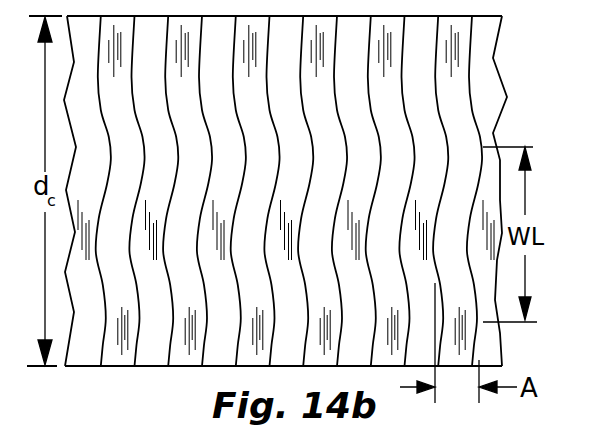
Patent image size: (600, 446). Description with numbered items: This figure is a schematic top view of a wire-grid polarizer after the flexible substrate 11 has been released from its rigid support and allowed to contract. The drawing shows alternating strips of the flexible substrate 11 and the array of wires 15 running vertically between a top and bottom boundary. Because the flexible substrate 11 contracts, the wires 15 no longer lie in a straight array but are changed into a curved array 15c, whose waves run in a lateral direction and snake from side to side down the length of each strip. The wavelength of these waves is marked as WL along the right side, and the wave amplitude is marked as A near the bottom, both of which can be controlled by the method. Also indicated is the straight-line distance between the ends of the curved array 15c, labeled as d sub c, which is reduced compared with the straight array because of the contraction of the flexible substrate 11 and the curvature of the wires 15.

The flexible substrate 11 is at (502, 101).
The array of wires 15 is at (476, 167).
The curved array 15c is at (112, 357).